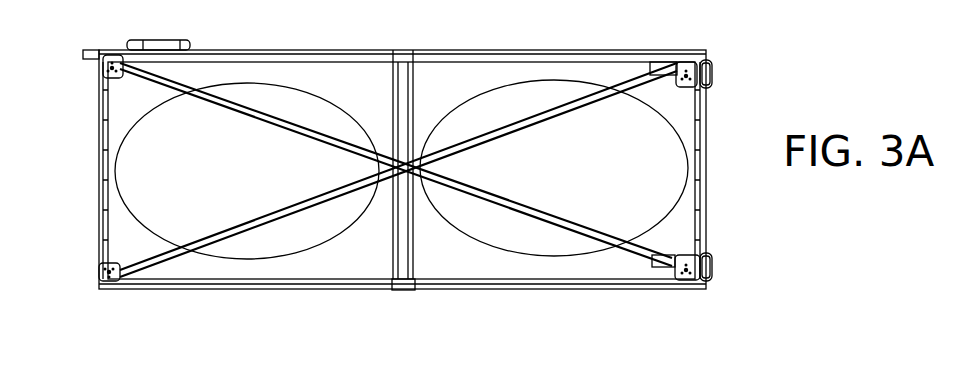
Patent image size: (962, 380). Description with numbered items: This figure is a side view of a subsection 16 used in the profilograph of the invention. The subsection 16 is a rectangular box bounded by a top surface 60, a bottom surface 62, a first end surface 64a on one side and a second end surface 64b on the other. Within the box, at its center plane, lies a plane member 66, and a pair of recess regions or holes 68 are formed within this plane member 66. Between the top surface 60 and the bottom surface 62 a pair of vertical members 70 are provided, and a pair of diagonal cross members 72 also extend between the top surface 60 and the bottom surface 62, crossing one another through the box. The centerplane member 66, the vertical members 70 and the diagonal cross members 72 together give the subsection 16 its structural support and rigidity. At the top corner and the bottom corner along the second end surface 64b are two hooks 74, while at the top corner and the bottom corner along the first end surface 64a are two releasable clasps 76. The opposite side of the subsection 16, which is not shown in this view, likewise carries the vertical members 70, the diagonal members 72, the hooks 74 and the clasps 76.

The subsection 16 is at (320, 326).
The top surface 60 is at (421, 44).
The bottom surface 62 is at (517, 291).
The first end surface 64a is at (708, 186).
The second end surface 64b is at (98, 192).
The plane member 66 is at (401, 170).
The recess regions or holes 68 is at (401, 169).
The vertical members 70 is at (393, 250).
The diagonal cross members 72 is at (322, 206).
The hooks 74 is at (97, 70).
The releasable clasps 76 is at (713, 73).